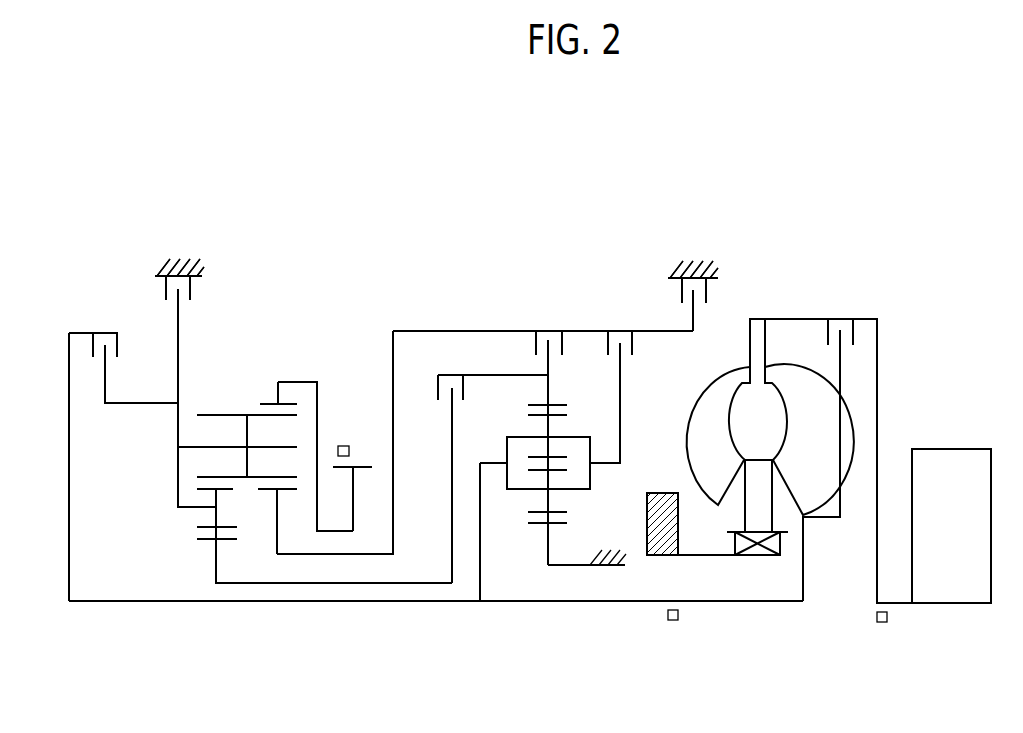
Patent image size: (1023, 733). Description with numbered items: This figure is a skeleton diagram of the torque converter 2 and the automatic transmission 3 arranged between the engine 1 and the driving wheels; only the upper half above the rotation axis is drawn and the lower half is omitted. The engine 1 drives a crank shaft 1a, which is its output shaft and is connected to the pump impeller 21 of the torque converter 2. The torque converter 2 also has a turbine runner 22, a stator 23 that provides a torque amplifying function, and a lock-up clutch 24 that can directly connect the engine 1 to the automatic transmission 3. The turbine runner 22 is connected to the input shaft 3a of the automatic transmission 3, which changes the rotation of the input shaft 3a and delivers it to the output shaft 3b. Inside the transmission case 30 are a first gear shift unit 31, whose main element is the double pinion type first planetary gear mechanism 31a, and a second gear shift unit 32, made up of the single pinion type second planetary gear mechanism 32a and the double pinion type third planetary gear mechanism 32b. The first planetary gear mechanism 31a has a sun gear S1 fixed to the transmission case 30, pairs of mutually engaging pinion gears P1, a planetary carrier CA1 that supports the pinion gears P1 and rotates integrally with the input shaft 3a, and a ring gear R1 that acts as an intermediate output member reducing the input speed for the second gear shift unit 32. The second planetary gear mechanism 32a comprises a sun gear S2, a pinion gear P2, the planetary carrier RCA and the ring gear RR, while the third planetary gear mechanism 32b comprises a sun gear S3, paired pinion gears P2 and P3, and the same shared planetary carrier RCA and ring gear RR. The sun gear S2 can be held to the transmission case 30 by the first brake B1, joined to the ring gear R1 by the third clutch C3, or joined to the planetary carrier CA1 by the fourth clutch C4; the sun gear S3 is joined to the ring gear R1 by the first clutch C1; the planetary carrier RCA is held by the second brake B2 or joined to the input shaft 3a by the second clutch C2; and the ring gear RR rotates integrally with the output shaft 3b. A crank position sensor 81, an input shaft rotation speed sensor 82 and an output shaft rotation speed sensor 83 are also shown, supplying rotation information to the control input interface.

The engine 1 is at (953, 449).
The crank shaft 1a is at (897, 604).
The torque converter 2 is at (802, 311).
The pump impeller 21 is at (712, 380).
The turbine runner 22 is at (801, 378).
The stator 23 is at (757, 460).
The lock-up clutch 24 is at (856, 310).
The automatic transmission 3 is at (535, 266).
The input shaft 3a is at (577, 601).
The output shaft 3b is at (358, 465).
The transmission case 30 is at (200, 287).
The first gear shift unit 31 is at (584, 310).
The first planetary gear mechanism 31a is at (508, 558).
The second gear shift unit 32 is at (349, 309).
The second planetary gear mechanism 32a is at (282, 571).
The third planetary gear mechanism 32b is at (202, 571).
The crank position sensor 81 is at (877, 617).
The input shaft rotation speed sensor 82 is at (673, 620).
The output shaft rotation speed sensor 83 is at (343, 446).
The first brake B1 is at (679, 293).
The second brake B2 is at (164, 293).
The first clutch C1 is at (438, 388).
The second clutch C2 is at (93, 350).
The third clutch C3 is at (535, 344).
The fourth clutch C4 is at (635, 345).
The planetary carrier CA1 is at (590, 478).
The pinion gears P1 is at (563, 412).
The pinion gear P2 is at (255, 480).
The pinion gear P3 is at (197, 489).
The ring gear R1 is at (528, 406).
The ring gear RR is at (262, 404).
The planetary carrier RCA is at (178, 467).
The sun gear S1 is at (540, 527).
The sun gear S2 is at (280, 489).
The sun gear S3 is at (197, 533).